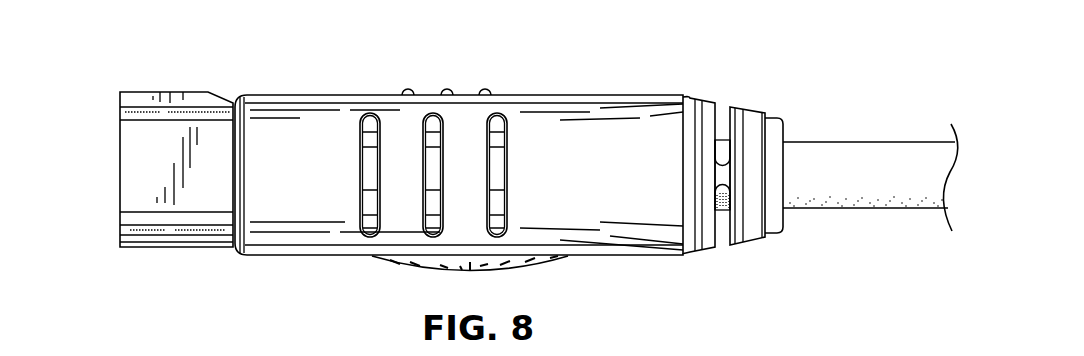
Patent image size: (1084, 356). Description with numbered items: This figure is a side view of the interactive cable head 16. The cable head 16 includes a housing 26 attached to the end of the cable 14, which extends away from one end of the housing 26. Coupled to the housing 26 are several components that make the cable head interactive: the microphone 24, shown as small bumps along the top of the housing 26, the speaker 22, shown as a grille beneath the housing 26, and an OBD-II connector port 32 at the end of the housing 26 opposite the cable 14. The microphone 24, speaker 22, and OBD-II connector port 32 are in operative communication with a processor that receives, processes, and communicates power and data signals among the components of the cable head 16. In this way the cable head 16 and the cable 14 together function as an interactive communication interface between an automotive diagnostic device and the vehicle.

The cable 14 is at (878, 150).
The cable head 16 is at (700, 48).
The speaker 22 is at (413, 265).
The microphone 24 is at (496, 75).
The housing 26 is at (277, 231).
The OBD-II connector port 32 is at (110, 158).